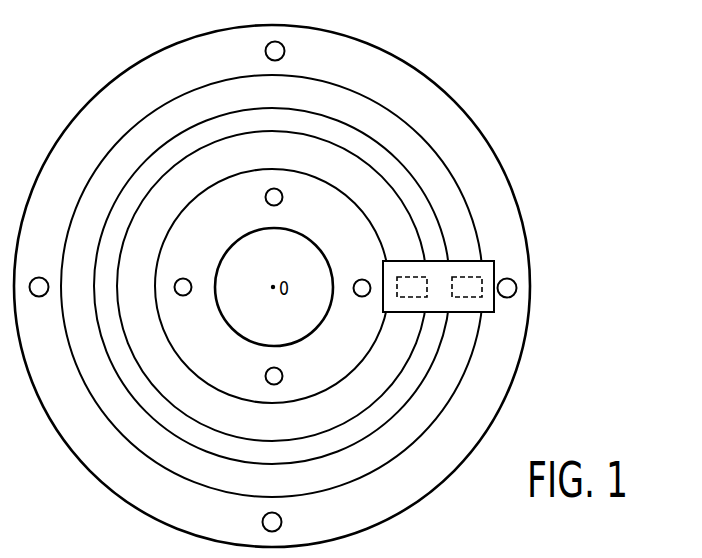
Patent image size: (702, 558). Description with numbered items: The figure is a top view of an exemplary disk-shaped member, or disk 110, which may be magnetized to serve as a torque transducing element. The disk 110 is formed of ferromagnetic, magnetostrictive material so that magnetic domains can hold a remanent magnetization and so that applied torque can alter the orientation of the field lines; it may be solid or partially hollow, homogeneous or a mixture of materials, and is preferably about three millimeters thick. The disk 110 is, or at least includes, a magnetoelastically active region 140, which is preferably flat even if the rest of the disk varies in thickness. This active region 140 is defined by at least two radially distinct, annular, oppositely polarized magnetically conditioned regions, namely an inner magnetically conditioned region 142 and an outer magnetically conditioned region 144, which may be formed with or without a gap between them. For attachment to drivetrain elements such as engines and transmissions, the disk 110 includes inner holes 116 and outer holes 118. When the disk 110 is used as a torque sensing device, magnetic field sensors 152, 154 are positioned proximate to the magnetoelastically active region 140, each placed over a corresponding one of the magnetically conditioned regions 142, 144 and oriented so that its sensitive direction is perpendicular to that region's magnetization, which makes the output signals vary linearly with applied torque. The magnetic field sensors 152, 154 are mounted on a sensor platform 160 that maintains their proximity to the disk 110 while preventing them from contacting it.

The disk-shaped member 110 is at (448, 115).
The magnetoelastically active region 140 is at (468, 194).
The outer magnetically conditioned region 144 is at (138, 425).
The inner magnetically conditioned region 142 is at (177, 383).
The inner holes 116 is at (282, 379).
The outer holes 118 is at (282, 521).
The magnetic field sensor 152 is at (405, 278).
The magnetic field sensor 154 is at (472, 276).
The sensor platform 160 is at (492, 313).